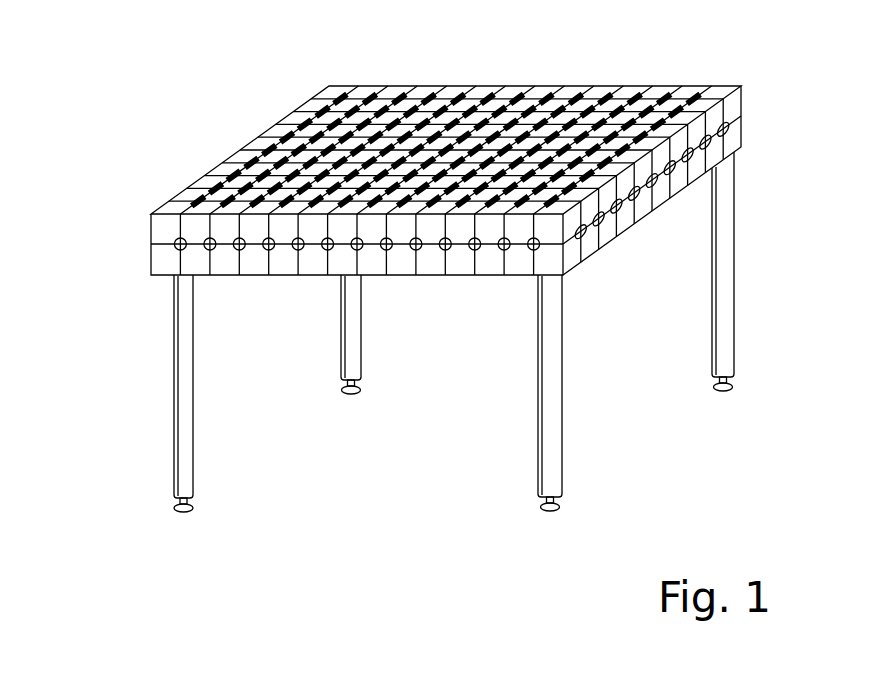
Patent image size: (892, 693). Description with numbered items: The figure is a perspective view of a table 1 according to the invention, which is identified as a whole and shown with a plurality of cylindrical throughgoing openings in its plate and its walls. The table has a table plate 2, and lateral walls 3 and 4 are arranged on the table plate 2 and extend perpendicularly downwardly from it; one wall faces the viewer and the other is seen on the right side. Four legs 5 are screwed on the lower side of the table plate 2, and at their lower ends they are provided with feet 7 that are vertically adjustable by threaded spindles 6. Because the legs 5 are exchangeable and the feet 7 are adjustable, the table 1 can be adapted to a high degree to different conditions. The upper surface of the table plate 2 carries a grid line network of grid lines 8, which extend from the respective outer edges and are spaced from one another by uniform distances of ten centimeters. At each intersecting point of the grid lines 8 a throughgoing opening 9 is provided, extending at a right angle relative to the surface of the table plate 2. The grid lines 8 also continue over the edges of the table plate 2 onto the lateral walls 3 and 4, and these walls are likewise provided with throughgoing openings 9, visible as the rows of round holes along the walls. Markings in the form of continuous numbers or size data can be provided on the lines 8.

The table 1 is at (163, 160).
The table plate 2 is at (270, 127).
The lateral wall 3 is at (160, 265).
The lateral wall 4 is at (733, 137).
The leg 5 is at (182, 413).
The threaded spindle 6 is at (446, 486).
The foot 7 is at (183, 513).
The grid line 8 is at (352, 90).
The throughgoing opening 9 is at (375, 98).